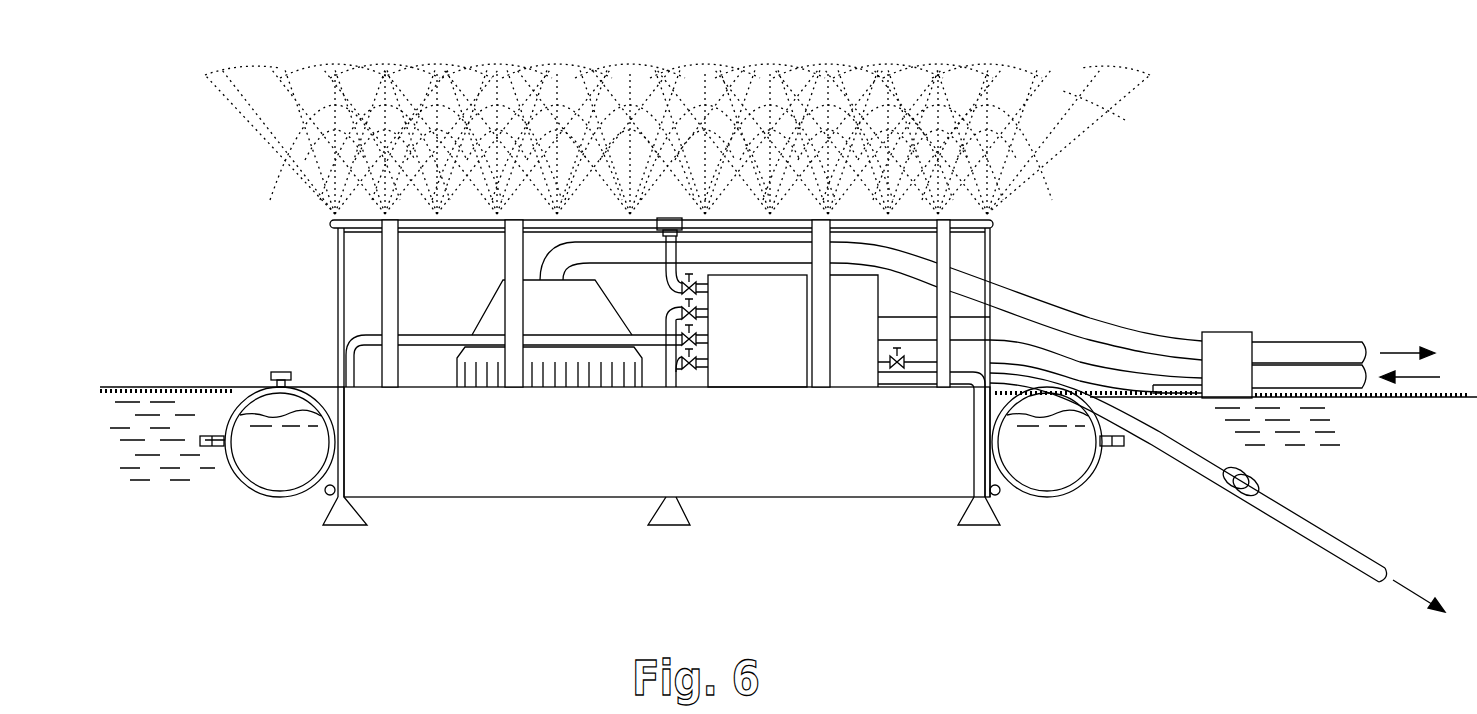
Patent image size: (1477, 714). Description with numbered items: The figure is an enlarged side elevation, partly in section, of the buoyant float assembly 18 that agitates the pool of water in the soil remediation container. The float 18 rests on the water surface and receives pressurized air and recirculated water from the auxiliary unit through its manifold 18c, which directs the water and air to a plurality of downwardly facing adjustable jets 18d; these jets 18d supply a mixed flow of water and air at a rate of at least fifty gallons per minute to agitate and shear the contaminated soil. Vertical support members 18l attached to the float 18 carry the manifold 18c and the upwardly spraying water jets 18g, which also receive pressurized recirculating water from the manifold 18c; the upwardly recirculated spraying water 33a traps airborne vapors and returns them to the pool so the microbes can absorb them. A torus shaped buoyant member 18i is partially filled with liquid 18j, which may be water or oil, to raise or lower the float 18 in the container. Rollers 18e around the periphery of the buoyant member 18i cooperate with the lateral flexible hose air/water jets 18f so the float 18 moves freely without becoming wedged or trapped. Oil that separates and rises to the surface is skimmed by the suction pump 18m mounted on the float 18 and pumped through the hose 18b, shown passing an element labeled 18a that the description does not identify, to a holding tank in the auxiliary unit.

The buoyant float assembly 18 is at (278, 223).
The upwardly recirculated spraying water 33a is at (1073, 148).
The upwardly spraying water jets 18g is at (362, 230).
The vertical support members 18l is at (512, 270).
The suction pump 18m is at (587, 322).
The manifold 18c is at (789, 341).
The hose 18b is at (1090, 322).
The hose coupling 18a is at (1158, 390).
The torus shaped buoyant member 18i is at (233, 405).
The liquid 18j is at (294, 469).
The rollers 18e is at (190, 445).
The downwardly facing adjustable jets 18d is at (350, 525).
The flexible hose air/water jets 18f is at (1302, 535).